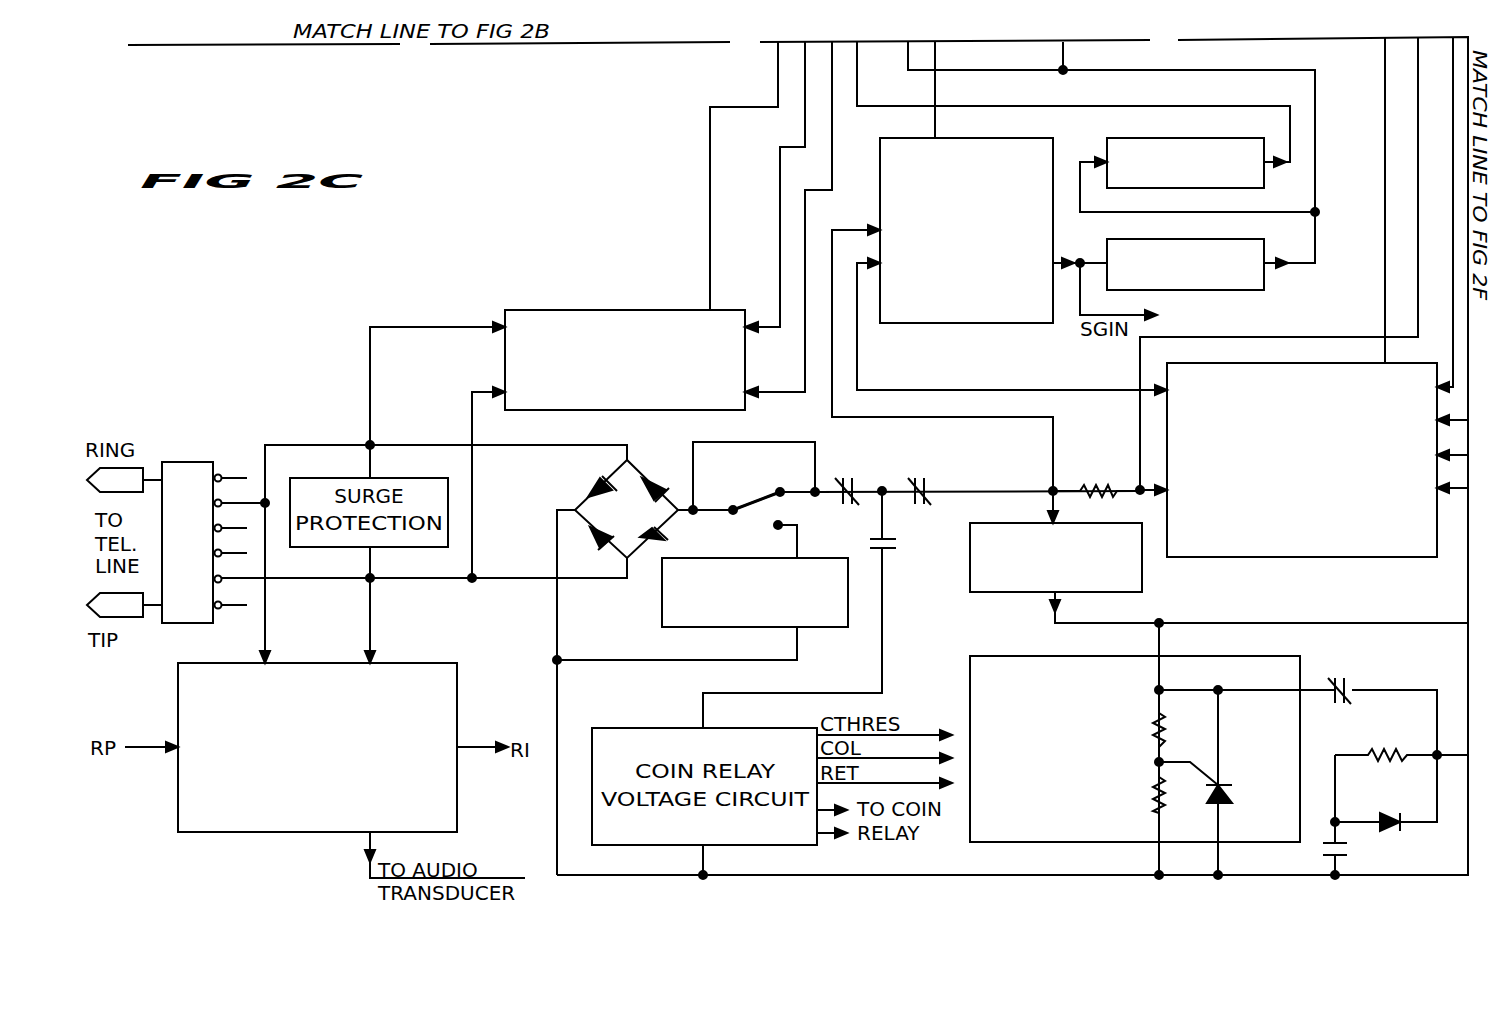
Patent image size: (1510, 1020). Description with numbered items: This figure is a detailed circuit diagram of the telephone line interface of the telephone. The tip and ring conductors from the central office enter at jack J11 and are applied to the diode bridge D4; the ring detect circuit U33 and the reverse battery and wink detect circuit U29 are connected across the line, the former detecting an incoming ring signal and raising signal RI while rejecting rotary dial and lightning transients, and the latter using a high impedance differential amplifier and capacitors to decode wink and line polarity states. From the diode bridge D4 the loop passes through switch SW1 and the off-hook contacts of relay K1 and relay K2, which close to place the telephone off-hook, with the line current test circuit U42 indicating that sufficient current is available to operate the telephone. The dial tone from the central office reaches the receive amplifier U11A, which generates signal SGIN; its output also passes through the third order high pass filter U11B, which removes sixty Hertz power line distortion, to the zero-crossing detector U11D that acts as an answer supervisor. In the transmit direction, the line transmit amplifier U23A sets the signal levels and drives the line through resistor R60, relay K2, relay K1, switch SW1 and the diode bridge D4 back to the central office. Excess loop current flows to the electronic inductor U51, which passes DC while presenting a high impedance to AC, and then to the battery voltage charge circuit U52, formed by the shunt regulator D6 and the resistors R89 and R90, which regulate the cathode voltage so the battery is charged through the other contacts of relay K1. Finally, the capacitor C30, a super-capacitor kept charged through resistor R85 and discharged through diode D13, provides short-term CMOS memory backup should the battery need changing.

The RJ11C telephone line jack J11 is at (202, 545).
The ring detect circuit U33 is at (317, 760).
The reverse battery and wink detect circuit U29 is at (626, 372).
The diode bridge D4 is at (588, 502).
The switch SW1 is at (754, 500).
The relay K1 is at (1095, 575).
The relay K2 is at (913, 514).
The line current test circuit U42 is at (757, 605).
The resistor R60 is at (1096, 489).
The receive amplifier U11A is at (966, 244).
The zero-crossing detector U11D is at (1185, 175).
The third order high pass filter U11B is at (1185, 276).
The line transmit amplifier U23A is at (1302, 473).
The electronic inductor U51 is at (1056, 570).
The battery voltage charge circuit U52 is at (1135, 767).
The resistor R90 is at (1126, 737).
The resistor R89 is at (1127, 796).
The shunt regulator D6 is at (1224, 784).
The resistor R85 is at (1386, 732).
The diode D13 is at (1384, 799).
The capacitor C30 is at (1390, 858).